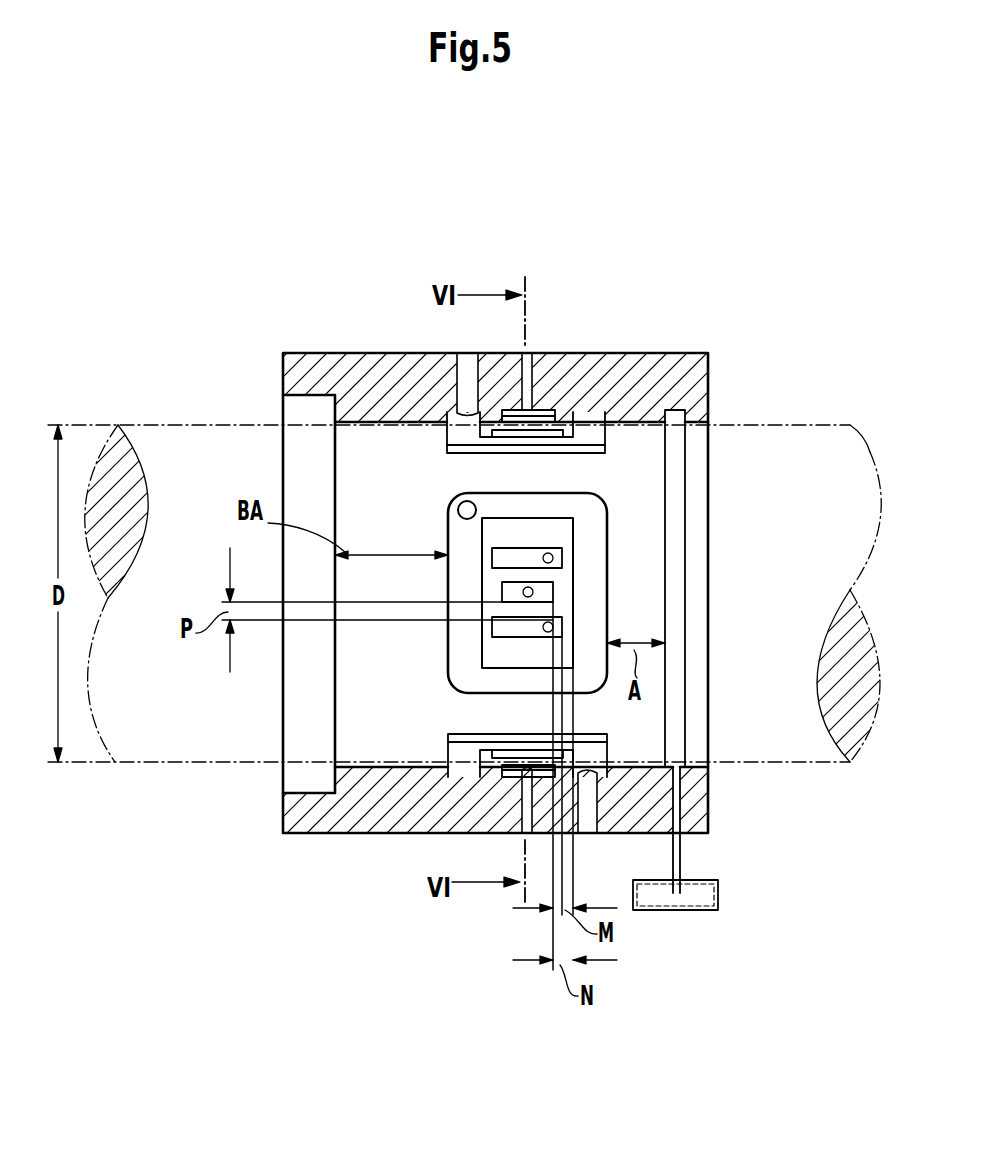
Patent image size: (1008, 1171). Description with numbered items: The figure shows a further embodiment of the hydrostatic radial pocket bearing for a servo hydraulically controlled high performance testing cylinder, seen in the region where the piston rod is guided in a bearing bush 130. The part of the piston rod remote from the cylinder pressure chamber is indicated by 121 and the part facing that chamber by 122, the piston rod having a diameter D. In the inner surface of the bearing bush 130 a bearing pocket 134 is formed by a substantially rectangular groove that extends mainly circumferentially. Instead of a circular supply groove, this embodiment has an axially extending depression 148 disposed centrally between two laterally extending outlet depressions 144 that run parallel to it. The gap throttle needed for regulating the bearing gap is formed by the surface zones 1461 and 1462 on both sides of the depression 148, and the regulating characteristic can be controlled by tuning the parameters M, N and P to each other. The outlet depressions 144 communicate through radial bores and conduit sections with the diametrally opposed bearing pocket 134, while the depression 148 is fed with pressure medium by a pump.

The bearing bush 130 is at (661, 368).
The part of the piston rod section remote from the cylinder pressure chamber 121 is at (800, 437).
The part of the piston rod section facing the cylinder pressure chamber 122 is at (155, 710).
The bearing pocket 134 is at (610, 526).
The surface zone 1461 is at (505, 573).
The surface zone 1462 is at (508, 608).
The axially extending depression 148 is at (540, 593).
The outlet depressions 144 is at (523, 630).